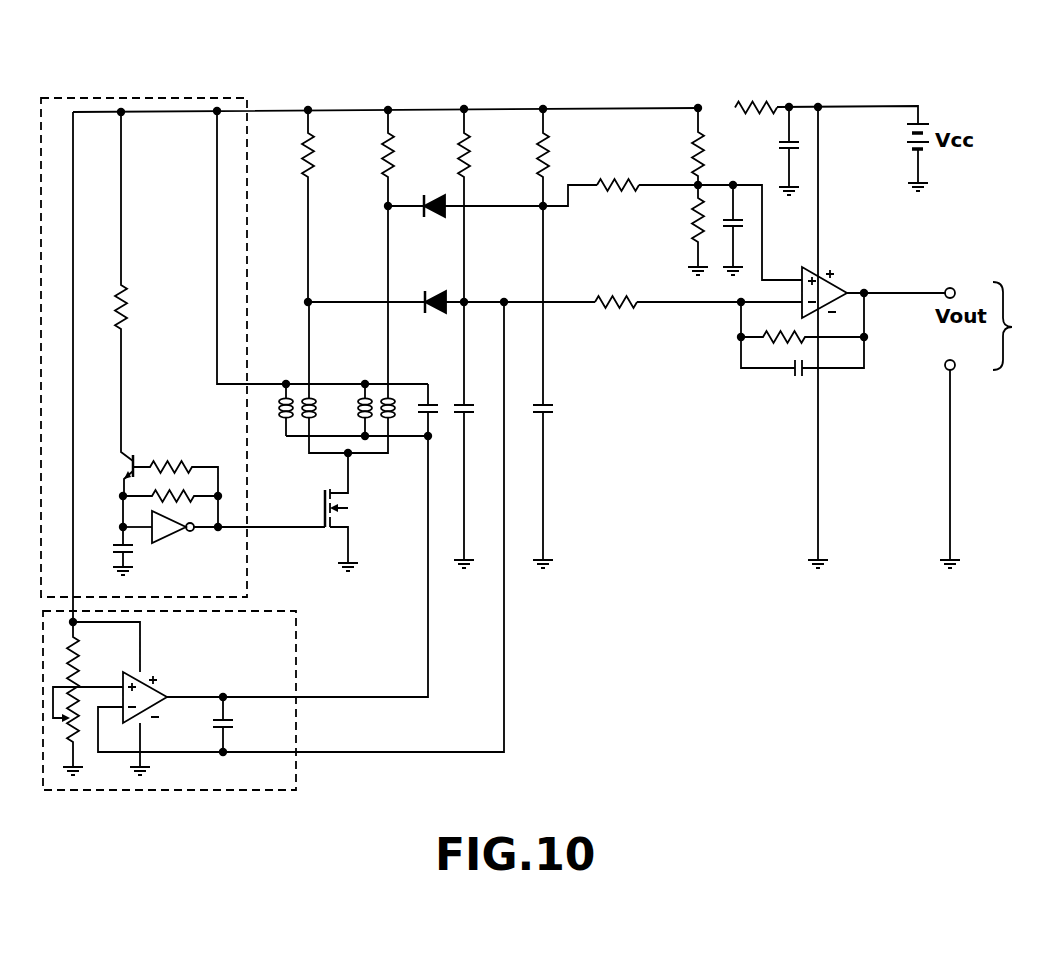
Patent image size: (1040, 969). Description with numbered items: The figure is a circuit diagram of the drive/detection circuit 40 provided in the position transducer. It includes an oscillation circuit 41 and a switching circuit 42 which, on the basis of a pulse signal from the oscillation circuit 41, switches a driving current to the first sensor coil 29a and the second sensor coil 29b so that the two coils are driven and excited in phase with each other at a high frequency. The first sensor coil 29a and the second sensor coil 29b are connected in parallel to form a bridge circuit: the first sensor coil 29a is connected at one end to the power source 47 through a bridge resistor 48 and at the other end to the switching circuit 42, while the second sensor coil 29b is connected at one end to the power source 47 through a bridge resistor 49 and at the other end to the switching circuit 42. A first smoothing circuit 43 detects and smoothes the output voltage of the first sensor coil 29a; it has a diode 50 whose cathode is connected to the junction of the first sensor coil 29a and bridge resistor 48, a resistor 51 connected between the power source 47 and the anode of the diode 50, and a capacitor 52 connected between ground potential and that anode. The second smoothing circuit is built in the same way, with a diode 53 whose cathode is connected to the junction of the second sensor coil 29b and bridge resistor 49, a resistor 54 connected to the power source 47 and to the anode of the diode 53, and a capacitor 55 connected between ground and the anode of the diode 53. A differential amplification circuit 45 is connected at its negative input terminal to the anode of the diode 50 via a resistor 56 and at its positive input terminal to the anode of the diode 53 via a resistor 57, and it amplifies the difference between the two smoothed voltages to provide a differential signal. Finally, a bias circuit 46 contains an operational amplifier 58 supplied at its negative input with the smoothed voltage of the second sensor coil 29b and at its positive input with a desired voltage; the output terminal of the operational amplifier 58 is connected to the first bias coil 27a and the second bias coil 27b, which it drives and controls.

The drive/detection circuit 40 is at (812, 86).
The oscillation circuit 41 is at (162, 98).
The switching circuit 42 is at (325, 483).
The first smoothing circuit 43 is at (555, 316).
The differential amplification circuit 45 is at (852, 272).
The bias circuit 46 is at (296, 775).
The power source 47 is at (928, 124).
The bridge resistor 48 is at (306, 182).
The bridge resistor 49 is at (384, 182).
The diode 50 is at (430, 292).
The resistor 51 is at (470, 160).
The capacitor 52 is at (470, 420).
The diode 53 is at (435, 212).
The resistor 54 is at (548, 150).
The capacitor 55 is at (548, 420).
The resistor 56 is at (620, 310).
The resistor 57 is at (622, 196).
The operational amplifier 58 is at (163, 690).
The first bias coil 27a is at (286, 424).
The second bias coil 27b is at (364, 398).
The first sensor coil 29a is at (311, 404).
The second sensor coil 29b is at (393, 420).